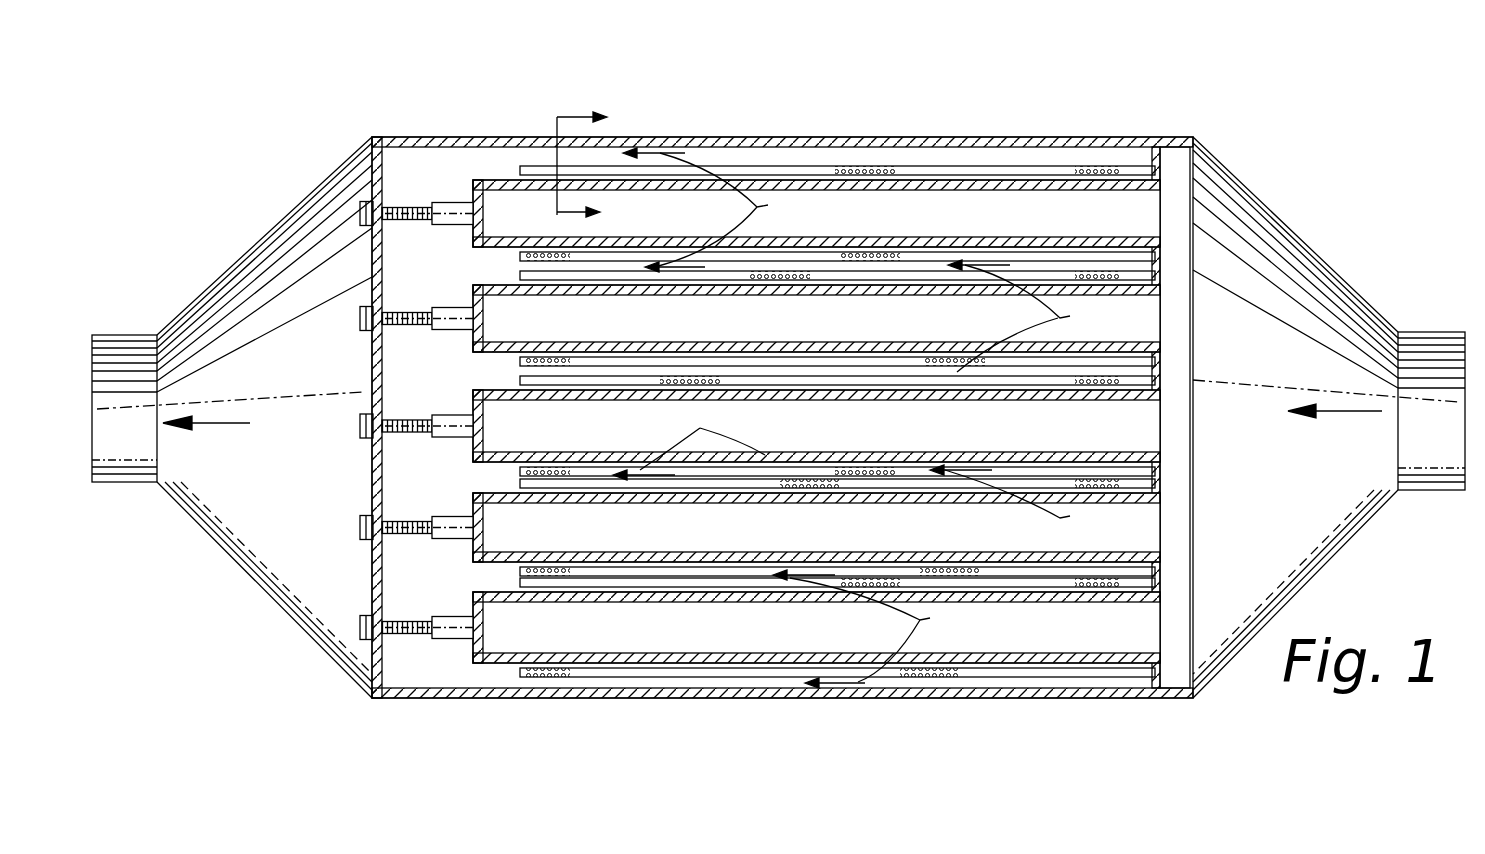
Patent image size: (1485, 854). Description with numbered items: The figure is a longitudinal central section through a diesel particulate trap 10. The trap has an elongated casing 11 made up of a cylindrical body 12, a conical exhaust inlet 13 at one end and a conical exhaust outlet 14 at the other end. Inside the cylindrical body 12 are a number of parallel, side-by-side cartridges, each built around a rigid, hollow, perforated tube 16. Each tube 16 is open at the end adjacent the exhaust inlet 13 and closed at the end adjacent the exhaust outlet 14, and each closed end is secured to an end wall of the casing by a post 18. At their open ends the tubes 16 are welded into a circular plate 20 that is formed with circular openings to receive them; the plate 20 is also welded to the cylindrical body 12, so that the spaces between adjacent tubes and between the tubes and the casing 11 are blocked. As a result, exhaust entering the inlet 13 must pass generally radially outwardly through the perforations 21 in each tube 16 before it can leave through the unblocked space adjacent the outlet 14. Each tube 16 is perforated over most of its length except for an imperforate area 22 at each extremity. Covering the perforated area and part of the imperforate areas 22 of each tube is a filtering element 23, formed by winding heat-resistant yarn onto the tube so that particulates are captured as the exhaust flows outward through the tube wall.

The diesel particulate trap 10 is at (1100, 94).
The casing 11 is at (903, 128).
The cylindrical body 12 is at (990, 698).
The conical exhaust inlet 13 is at (1290, 222).
The conical exhaust outlet 14 is at (223, 550).
The perforated tube 16 is at (816, 421).
The post 18 is at (398, 317).
The circular plate 20 is at (1193, 527).
The perforations 21 is at (908, 240).
The imperforate area 22 is at (1143, 238).
The filtering element 23 is at (787, 173).